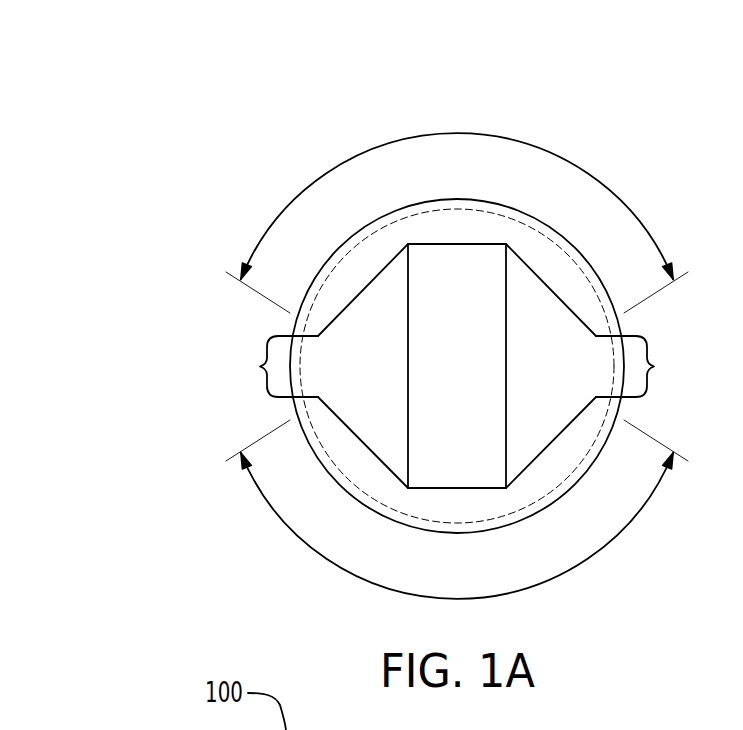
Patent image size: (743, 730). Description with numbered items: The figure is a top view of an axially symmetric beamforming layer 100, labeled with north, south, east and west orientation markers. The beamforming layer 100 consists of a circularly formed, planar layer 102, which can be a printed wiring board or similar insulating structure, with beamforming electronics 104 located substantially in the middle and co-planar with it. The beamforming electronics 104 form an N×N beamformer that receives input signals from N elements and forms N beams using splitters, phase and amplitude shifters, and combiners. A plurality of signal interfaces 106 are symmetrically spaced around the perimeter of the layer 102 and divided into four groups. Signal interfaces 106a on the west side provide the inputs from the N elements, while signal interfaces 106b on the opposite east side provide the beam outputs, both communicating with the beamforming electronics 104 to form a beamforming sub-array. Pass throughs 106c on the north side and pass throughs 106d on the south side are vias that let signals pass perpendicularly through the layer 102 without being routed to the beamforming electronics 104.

The beamforming layer 100 is at (237, 157).
The layer 102 is at (355, 231).
The beamforming electronics 104 is at (408, 366).
The signal interfaces 106 is at (330, 457).
The signal interface 106a is at (259, 366).
The signal interface 106b is at (655, 366).
The pass throughs 106c is at (585, 277).
The pass throughs 106d is at (588, 450).